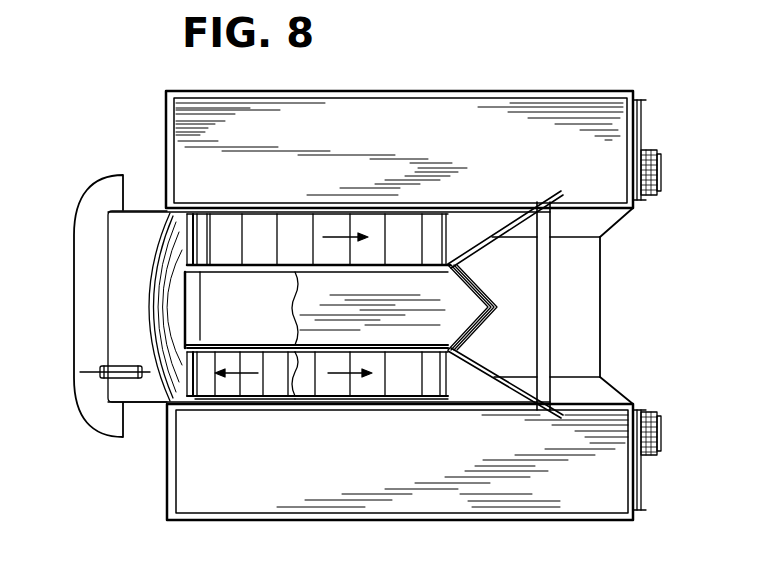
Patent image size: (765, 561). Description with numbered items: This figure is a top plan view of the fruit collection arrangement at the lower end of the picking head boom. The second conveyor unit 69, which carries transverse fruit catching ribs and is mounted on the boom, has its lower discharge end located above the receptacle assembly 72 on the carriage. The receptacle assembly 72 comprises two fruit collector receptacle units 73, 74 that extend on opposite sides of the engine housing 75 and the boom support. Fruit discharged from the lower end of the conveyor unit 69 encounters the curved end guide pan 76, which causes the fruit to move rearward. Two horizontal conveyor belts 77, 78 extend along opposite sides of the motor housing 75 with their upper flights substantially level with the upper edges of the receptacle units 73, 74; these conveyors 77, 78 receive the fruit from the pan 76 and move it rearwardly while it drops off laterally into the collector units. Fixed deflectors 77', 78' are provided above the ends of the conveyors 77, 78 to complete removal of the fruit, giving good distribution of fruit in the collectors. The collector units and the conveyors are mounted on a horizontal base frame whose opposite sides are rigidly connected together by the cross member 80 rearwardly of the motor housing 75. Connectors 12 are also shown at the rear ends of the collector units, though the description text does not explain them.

The receptacle assembly 72 is at (512, 74).
The fruit collector receptacle unit 74 is at (601, 90).
The fruit collector receptacle unit 73 is at (552, 517).
The connector 12 is at (661, 166).
The cross member 80 is at (550, 291).
The horizontal conveyor belt 77 is at (318, 216).
The fixed deflector 77' is at (505, 217).
The engine housing 75 is at (462, 295).
The fixed deflector 78' is at (505, 375).
The horizontal conveyor belt 78 is at (371, 396).
The second conveyor unit 69 is at (224, 400).
The curved end guide pan 76 is at (161, 297).